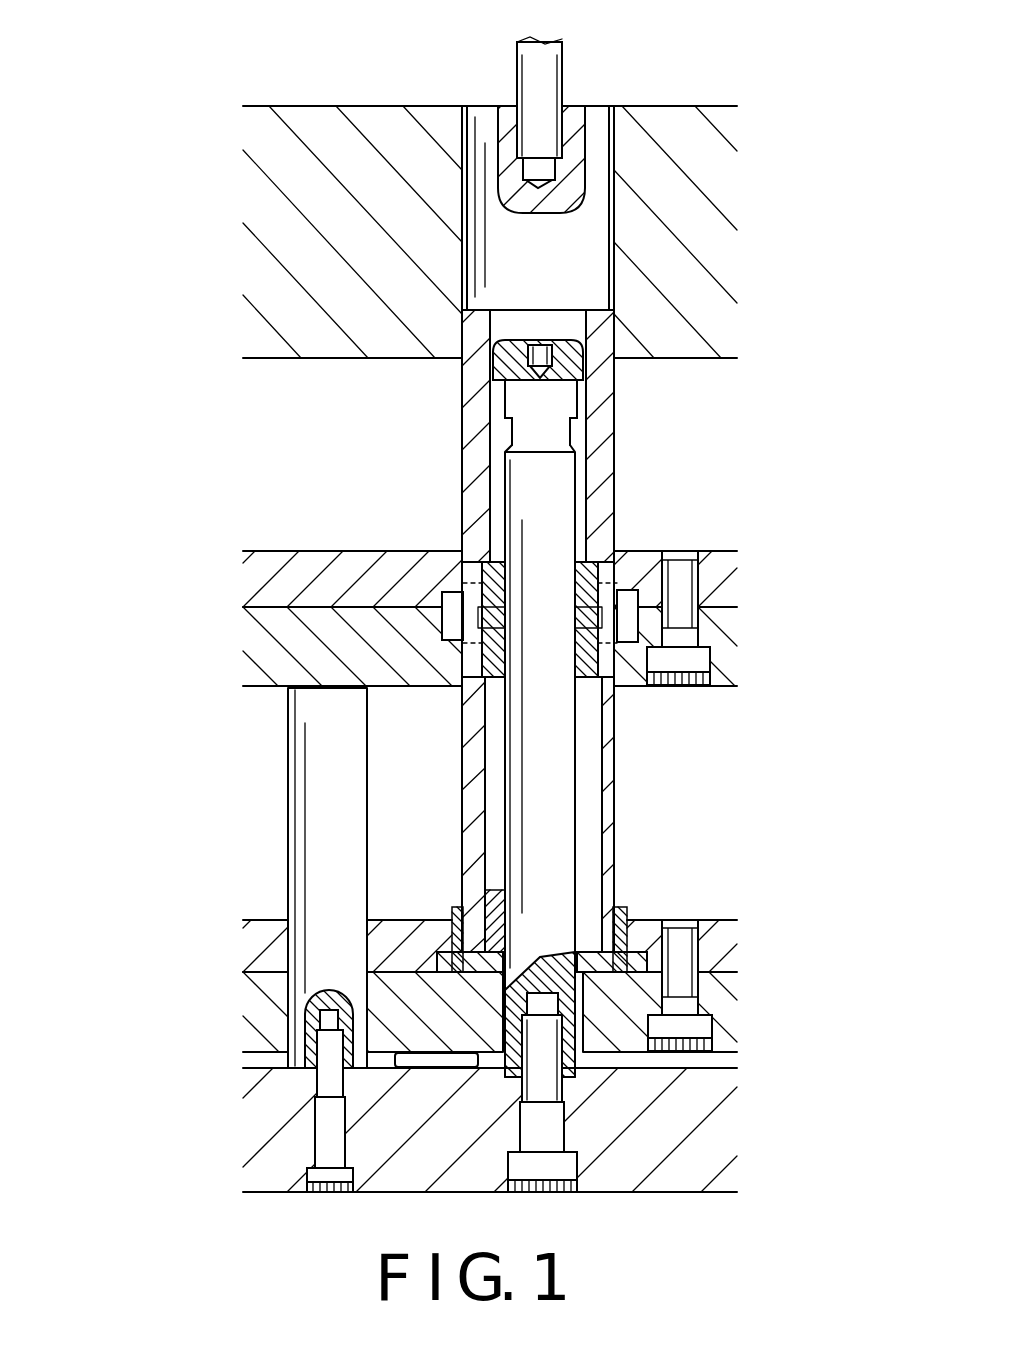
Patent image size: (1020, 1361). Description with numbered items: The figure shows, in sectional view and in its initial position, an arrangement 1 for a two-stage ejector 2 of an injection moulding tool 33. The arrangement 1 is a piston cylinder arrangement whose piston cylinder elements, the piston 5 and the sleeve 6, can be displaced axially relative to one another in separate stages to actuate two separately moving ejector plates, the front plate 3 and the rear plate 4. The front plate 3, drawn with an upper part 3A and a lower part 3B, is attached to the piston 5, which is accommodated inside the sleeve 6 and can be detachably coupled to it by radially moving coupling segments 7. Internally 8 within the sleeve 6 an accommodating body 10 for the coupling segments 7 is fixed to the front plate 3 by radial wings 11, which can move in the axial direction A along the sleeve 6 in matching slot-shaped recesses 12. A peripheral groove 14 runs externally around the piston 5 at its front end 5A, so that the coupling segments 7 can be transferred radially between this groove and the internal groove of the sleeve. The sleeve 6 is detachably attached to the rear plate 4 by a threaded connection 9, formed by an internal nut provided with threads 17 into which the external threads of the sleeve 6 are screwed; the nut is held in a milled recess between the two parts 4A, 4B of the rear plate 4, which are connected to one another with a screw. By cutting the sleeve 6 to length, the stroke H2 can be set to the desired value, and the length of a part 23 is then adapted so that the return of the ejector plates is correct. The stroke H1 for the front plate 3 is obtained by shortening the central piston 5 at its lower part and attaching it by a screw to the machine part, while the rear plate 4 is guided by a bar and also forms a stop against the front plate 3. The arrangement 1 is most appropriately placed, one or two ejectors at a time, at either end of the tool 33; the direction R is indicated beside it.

The arrangement 1 is at (608, 649).
The two-stage ejector 2 is at (492, 191).
The front plate 3 is at (417, 599).
The upper half of intermediate plate 3A is at (255, 580).
The lower half of intermediate plate 3B is at (265, 658).
The rear plate 4 is at (407, 976).
The part of the rear plate 4A is at (257, 943).
The part of the rear plate 4B is at (255, 1032).
The piston 5 is at (552, 775).
The front end of the piston 5A is at (557, 400).
The sleeve 6 is at (613, 822).
The coupling segments 7 is at (490, 560).
The interior of the sleeve 8 is at (583, 705).
The threaded connection 9 is at (448, 902).
The accommodating body 10 is at (590, 560).
The radial wings 11 is at (452, 598).
The slot-shaped recesses 12 is at (645, 690).
The peripheral groove 14 is at (527, 432).
The threads 17 is at (630, 913).
The part 23 is at (577, 120).
The tool 33 is at (265, 210).
The length of stroke H1 is at (207, 365).
The length of stroke H2 is at (253, 920).
The axial movement A is at (198, 765).
The direction R is at (817, 535).